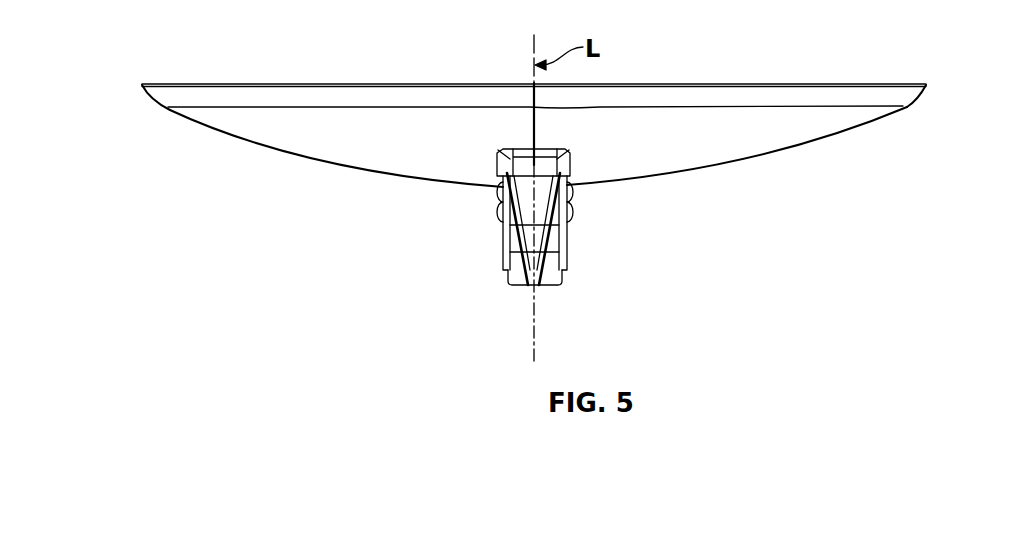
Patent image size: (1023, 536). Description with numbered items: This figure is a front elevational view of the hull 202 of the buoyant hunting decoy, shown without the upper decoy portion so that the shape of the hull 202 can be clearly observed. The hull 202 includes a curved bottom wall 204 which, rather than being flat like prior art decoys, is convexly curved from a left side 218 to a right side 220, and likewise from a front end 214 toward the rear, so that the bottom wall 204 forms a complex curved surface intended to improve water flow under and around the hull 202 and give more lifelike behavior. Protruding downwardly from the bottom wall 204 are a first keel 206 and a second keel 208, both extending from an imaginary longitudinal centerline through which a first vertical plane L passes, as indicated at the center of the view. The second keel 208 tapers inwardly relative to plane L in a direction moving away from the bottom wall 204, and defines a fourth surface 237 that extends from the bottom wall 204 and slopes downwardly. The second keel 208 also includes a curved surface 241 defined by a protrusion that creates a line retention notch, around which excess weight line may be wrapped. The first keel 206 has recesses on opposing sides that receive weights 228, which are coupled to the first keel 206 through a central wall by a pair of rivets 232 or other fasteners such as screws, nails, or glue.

The hull 202 is at (252, 172).
The curved bottom wall 204 is at (697, 143).
The first keel 206 is at (552, 277).
The second keel 208 is at (532, 287).
The front end 214 is at (532, 92).
The left side 218 is at (150, 99).
The right side 220 is at (918, 98).
The weights 228 is at (500, 245).
The rivets 232 is at (498, 216).
The fourth surface 237 is at (567, 185).
The curved surface 241 is at (528, 257).